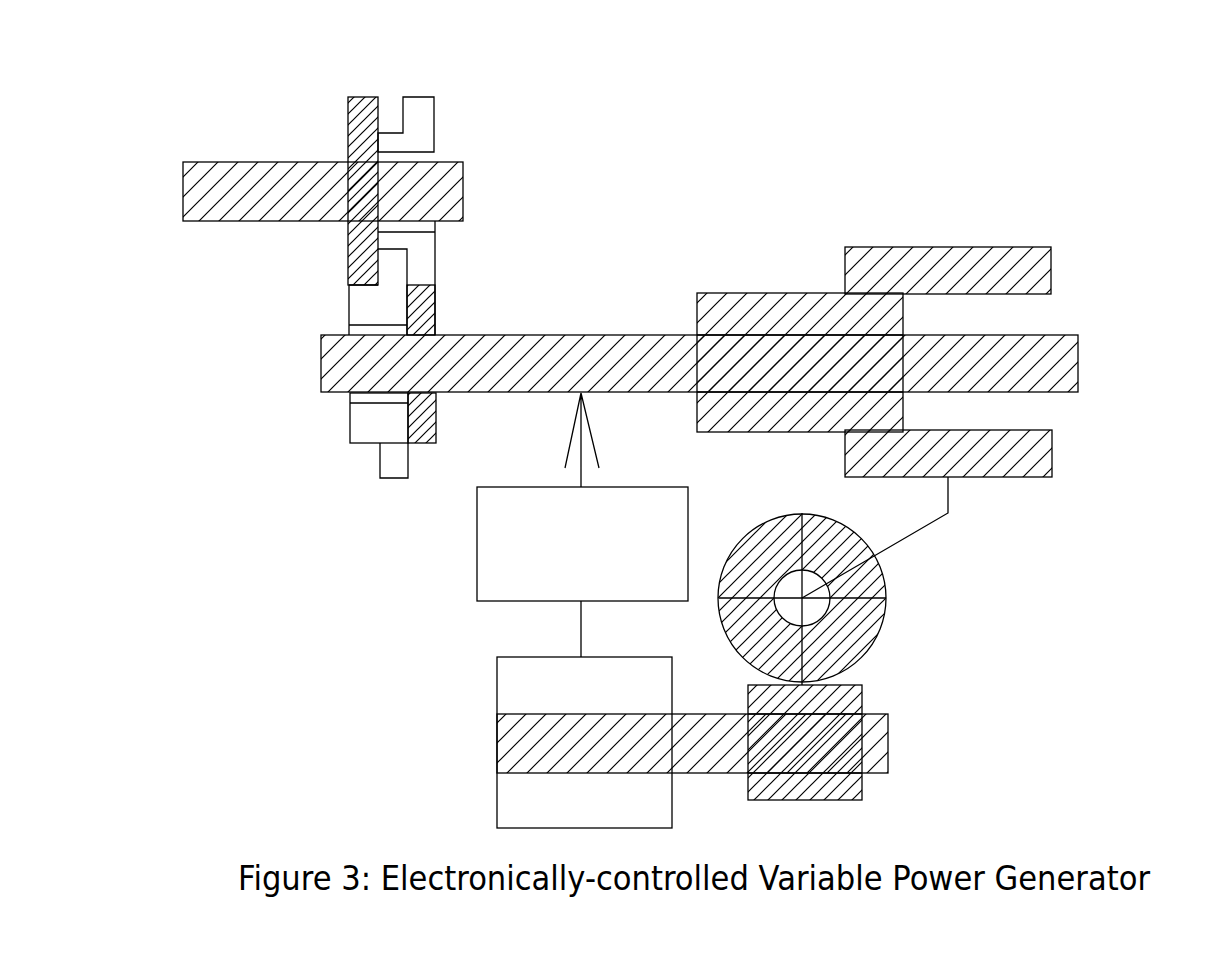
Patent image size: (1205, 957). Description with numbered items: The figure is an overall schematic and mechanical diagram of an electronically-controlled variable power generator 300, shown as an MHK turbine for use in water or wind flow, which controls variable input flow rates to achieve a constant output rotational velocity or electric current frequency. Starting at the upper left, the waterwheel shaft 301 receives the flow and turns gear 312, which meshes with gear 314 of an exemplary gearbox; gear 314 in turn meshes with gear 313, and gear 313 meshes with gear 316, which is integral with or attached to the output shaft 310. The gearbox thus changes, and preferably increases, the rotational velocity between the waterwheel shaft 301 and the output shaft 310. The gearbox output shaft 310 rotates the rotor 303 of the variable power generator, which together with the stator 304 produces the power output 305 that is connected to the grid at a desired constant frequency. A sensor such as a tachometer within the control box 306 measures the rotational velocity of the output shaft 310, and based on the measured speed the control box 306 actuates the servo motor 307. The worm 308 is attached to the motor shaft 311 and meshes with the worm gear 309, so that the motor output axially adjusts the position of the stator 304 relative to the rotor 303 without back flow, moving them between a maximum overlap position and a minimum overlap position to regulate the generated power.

The electronically-controlled variable power generator 300 is at (683, 103).
The waterwheel shaft 301 is at (200, 200).
The rotor 303 is at (765, 300).
The stator 304 is at (998, 465).
The power output 305 is at (1013, 247).
The control box 306 is at (492, 537).
The servo motor 307 is at (520, 678).
The worm 308 is at (847, 697).
The worm gear 309 is at (872, 622).
The output shaft 310 is at (1078, 368).
The motor shaft 311 is at (530, 745).
The gear 312 is at (352, 117).
The gear 313 is at (420, 128).
The gear 314 is at (355, 425).
The gear 316 is at (418, 303).